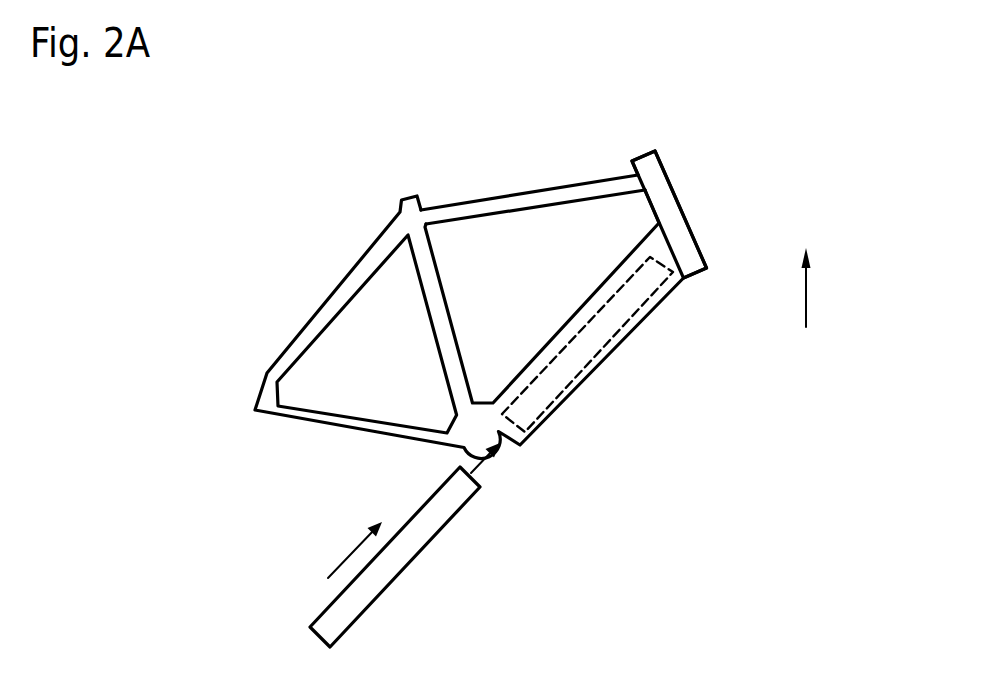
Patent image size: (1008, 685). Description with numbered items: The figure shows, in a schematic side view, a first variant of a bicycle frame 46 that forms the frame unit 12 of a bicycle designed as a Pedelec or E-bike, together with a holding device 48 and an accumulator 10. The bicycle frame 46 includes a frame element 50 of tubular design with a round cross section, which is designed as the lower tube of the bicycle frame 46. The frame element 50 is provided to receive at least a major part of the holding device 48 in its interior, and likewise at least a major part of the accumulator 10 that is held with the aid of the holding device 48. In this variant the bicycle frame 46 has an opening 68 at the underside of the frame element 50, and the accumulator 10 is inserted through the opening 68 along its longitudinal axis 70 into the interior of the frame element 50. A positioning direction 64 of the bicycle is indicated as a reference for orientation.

The accumulator 10 is at (407, 553).
The frame unit 12 is at (575, 197).
The bicycle frame 46 is at (490, 208).
The holding device 48 is at (560, 378).
The frame element 50 is at (687, 227).
The positioning direction 64 is at (808, 293).
The opening 68 is at (508, 450).
The longitudinal axis 70 is at (347, 555).